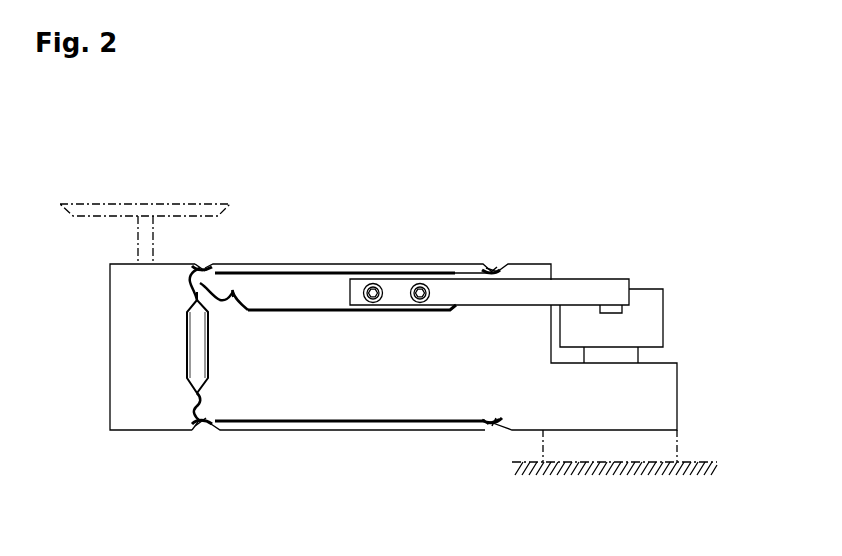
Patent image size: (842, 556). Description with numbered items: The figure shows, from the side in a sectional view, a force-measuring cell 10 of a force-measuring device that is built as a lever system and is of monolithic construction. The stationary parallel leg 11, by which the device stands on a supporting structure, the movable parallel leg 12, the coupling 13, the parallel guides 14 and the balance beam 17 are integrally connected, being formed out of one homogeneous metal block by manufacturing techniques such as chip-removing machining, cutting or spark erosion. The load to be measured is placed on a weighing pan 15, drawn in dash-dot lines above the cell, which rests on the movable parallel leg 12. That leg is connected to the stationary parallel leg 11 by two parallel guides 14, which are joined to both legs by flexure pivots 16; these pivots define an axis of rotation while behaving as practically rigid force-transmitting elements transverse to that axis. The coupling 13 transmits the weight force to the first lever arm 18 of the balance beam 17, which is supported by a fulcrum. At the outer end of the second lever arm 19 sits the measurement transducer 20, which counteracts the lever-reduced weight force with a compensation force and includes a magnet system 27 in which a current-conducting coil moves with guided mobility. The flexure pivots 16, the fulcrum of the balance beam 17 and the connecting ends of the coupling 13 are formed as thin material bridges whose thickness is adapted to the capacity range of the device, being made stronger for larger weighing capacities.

The force-measuring cell 10 is at (678, 213).
The stationary parallel leg 11 is at (454, 369).
The movable parallel leg 12 is at (152, 347).
The coupling 13 is at (195, 363).
The parallel guides 14 is at (433, 264).
The weighing pan 15 is at (143, 204).
The flexure pivots 16 is at (200, 266).
The balance beam 17 is at (280, 325).
The first lever arm 18 is at (218, 287).
The second lever arm 19 is at (297, 290).
The measurement transducer 20 is at (680, 332).
The magnet system 27 is at (663, 307).